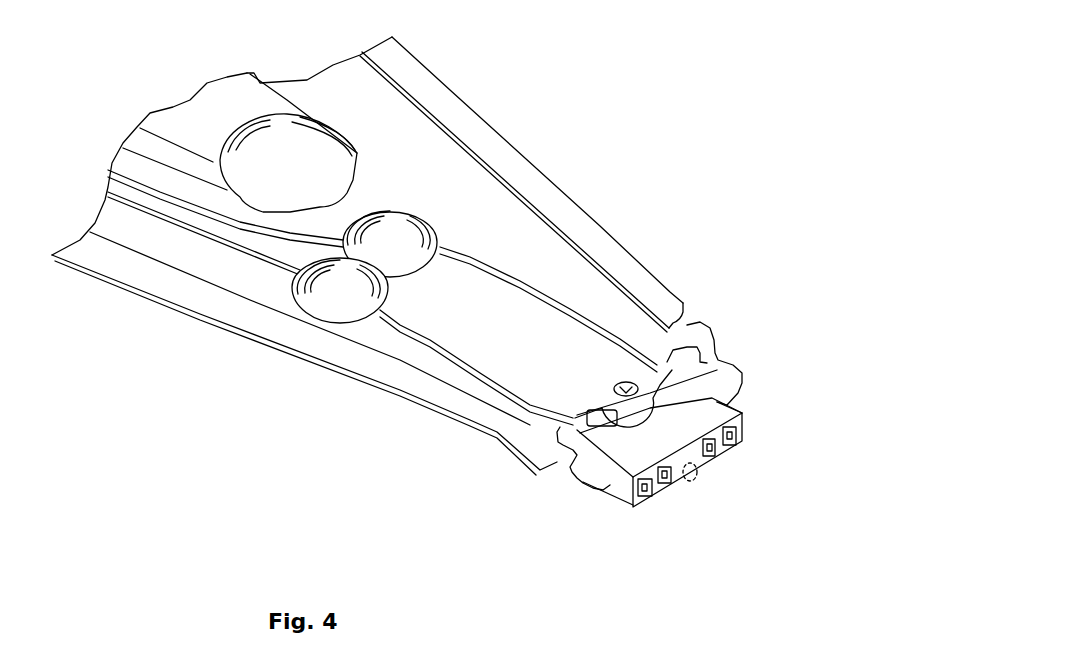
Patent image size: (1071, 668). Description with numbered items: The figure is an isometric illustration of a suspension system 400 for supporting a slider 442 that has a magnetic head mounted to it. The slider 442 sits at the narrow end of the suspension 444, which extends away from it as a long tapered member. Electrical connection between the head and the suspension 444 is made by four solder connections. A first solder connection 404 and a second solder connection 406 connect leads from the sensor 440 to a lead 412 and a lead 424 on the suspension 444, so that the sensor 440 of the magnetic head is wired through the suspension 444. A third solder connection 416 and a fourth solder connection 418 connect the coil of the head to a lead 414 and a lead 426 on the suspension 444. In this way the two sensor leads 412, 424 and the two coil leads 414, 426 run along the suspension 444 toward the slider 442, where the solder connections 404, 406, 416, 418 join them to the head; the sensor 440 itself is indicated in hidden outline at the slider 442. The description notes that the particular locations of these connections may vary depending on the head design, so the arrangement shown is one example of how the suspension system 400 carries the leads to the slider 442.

The suspension system 400 is at (832, 96).
The suspension 444 is at (540, 167).
The lead 414 is at (598, 320).
The lead 426 is at (517, 283).
The lead 424 is at (460, 352).
The lead 412 is at (405, 338).
The slider 442 is at (583, 497).
The first solder connection 404 is at (630, 500).
The second solder connection 406 is at (658, 493).
The third solder connection 416 is at (745, 428).
The fourth solder connection 418 is at (718, 445).
The sensor 440 is at (703, 483).